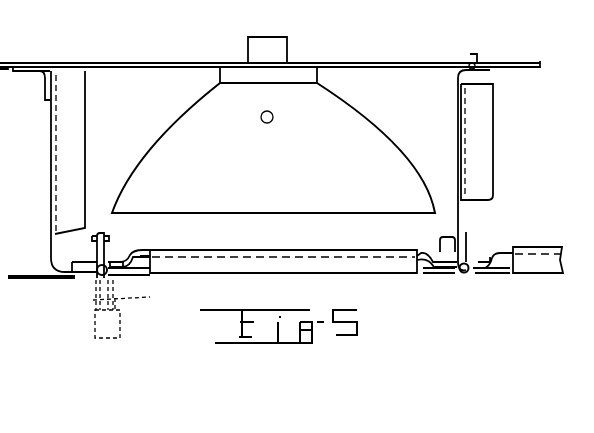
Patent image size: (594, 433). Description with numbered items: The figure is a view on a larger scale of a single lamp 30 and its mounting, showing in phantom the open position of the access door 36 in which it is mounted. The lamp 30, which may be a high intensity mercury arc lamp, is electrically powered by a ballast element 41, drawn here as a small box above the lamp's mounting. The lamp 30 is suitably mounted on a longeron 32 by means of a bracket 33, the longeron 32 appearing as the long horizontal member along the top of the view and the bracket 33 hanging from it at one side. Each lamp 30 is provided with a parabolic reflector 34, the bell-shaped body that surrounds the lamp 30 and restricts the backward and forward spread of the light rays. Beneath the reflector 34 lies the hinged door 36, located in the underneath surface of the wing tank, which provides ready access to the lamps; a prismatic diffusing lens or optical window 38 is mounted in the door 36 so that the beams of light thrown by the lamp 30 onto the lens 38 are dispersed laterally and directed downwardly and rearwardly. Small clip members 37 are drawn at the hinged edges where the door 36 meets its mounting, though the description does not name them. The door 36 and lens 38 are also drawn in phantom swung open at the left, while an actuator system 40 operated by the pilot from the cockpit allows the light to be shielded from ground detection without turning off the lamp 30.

The lamp 30 is at (265, 123).
The longeron 32 is at (413, 58).
The bracket 33 is at (462, 122).
The parabolic reflector 34 is at (315, 151).
The hinged door 36 is at (93, 300).
The Z-shaped clip 37 is at (136, 260).
The prismatic diffusing lens 38 is at (107, 333).
The actuator system 40 is at (218, 76).
The ballast element 41 is at (282, 42).